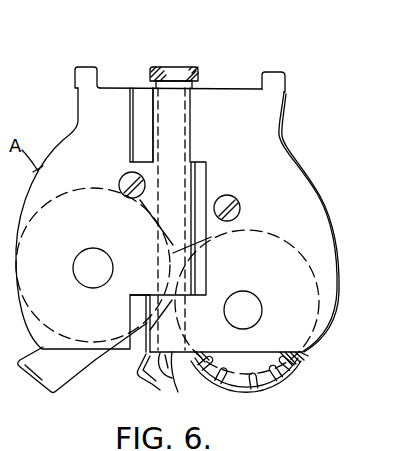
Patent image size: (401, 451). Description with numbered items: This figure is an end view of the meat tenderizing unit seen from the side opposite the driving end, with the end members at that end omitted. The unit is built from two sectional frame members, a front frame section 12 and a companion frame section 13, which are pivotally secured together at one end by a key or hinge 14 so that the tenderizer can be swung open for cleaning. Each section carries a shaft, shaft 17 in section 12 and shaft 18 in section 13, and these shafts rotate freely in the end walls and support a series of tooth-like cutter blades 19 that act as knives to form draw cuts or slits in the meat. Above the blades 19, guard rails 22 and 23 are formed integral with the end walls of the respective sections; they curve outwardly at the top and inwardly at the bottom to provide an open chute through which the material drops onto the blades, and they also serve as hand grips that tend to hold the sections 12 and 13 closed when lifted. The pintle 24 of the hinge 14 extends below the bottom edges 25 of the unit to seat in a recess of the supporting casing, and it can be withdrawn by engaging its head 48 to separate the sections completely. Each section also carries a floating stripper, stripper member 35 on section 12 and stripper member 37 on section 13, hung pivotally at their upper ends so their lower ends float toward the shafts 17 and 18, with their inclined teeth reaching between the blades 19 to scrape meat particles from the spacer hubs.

The frame section 12 is at (67, 136).
The frame section 13 is at (292, 174).
The hinge 14 is at (192, 162).
The shaft 17 is at (88, 283).
The shaft 18 is at (248, 300).
The cutter blades 19 is at (300, 384).
The guard rail 22 is at (77, 67).
The guard rail 23 is at (275, 72).
The pintle 24 is at (170, 372).
The bottom edges 25 is at (92, 363).
The stripper member 35 is at (41, 377).
The stripper member 37 is at (152, 386).
The head 48 is at (166, 72).